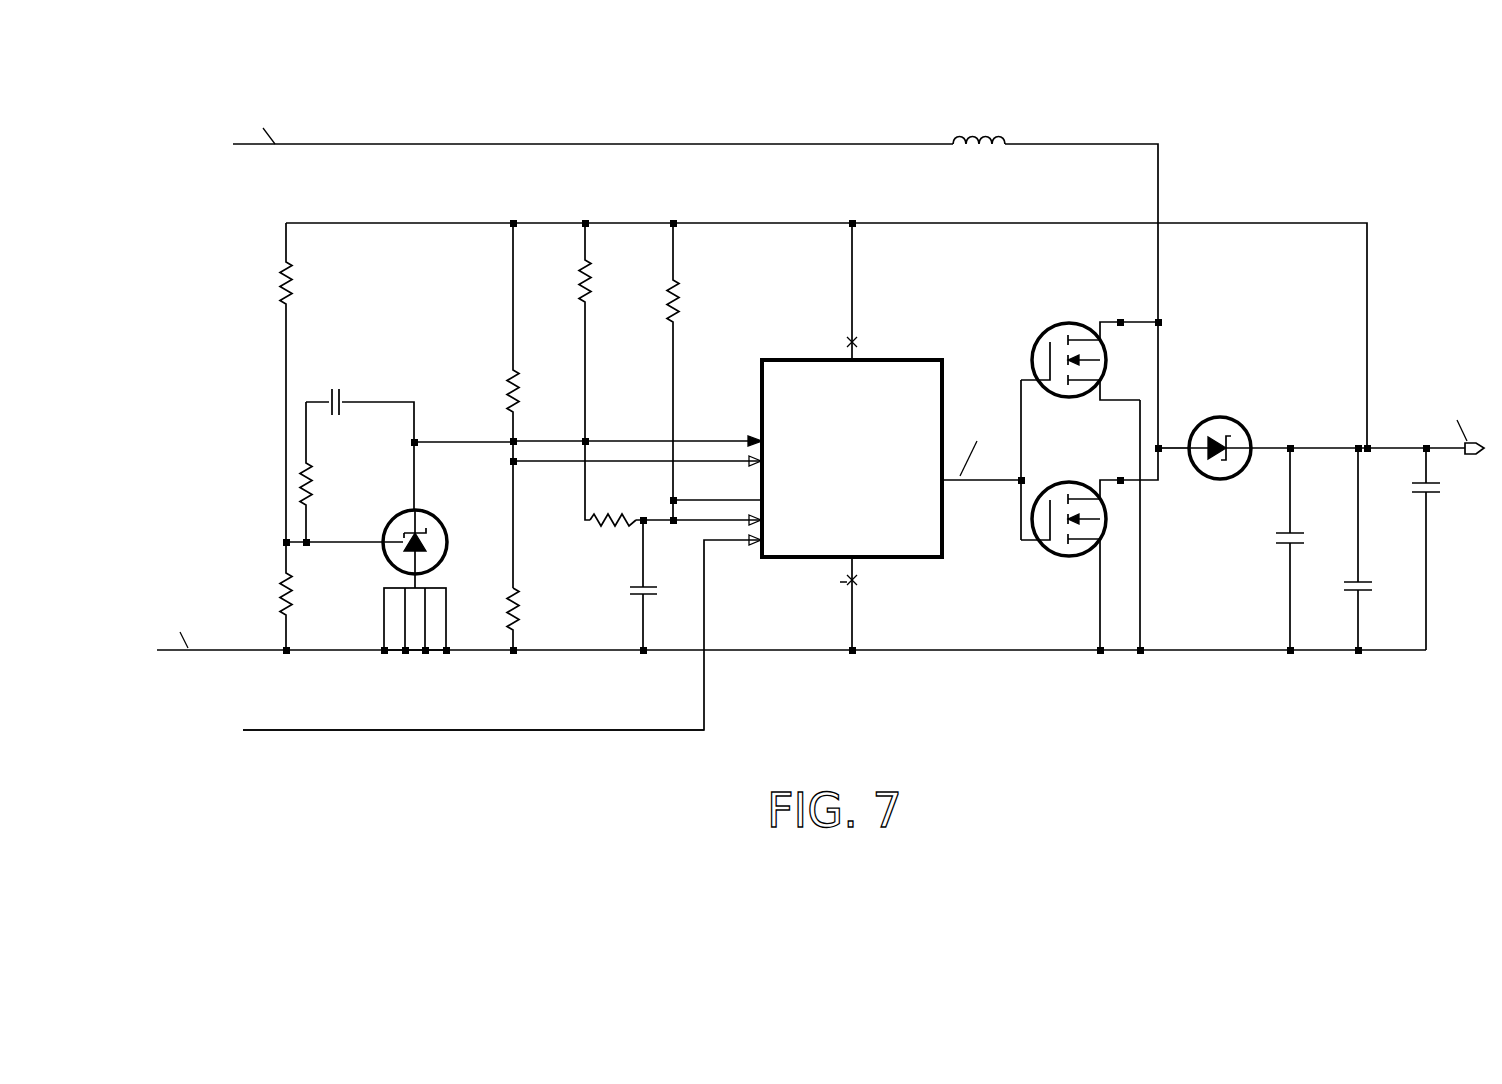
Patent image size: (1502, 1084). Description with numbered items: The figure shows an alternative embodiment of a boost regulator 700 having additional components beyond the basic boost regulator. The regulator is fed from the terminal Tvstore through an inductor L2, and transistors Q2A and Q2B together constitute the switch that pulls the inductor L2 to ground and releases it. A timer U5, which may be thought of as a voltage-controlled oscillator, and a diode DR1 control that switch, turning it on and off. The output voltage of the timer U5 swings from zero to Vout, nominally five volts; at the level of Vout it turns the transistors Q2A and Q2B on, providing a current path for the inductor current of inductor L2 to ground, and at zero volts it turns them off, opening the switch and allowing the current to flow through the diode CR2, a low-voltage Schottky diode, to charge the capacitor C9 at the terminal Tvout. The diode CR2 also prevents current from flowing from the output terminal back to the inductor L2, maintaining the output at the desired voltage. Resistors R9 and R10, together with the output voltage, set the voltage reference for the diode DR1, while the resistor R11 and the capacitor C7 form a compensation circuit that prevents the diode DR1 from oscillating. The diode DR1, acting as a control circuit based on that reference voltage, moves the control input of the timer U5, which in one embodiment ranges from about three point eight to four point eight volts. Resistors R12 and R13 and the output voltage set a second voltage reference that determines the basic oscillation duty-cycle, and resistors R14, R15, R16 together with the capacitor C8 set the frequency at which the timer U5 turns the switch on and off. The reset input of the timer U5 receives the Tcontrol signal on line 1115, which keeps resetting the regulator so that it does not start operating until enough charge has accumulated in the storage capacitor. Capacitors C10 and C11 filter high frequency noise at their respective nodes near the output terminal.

The boost regulator 700 is at (810, 453).
The Tcontrol line 1115 is at (323, 730).
The inductor L2 is at (979, 114).
The resistor R9 is at (308, 382).
The resistor R10 is at (308, 596).
The resistor R11 is at (328, 472).
The resistor R12 is at (532, 405).
The resistor R13 is at (537, 616).
The resistor R14 is at (602, 332).
The resistor R15 is at (613, 495).
The resistor R16 is at (695, 371).
The capacitor C7 is at (360, 433).
The capacitor C8 is at (658, 585).
The capacitor C9 is at (1303, 549).
The capacitor C10 is at (1375, 549).
The capacitor C11 is at (1450, 549).
The diode DR1 is at (447, 551).
The timer U5 is at (864, 436).
The transistor Q2A is at (1089, 329).
The transistor Q2B is at (1070, 544).
The diode CR2 is at (1220, 431).